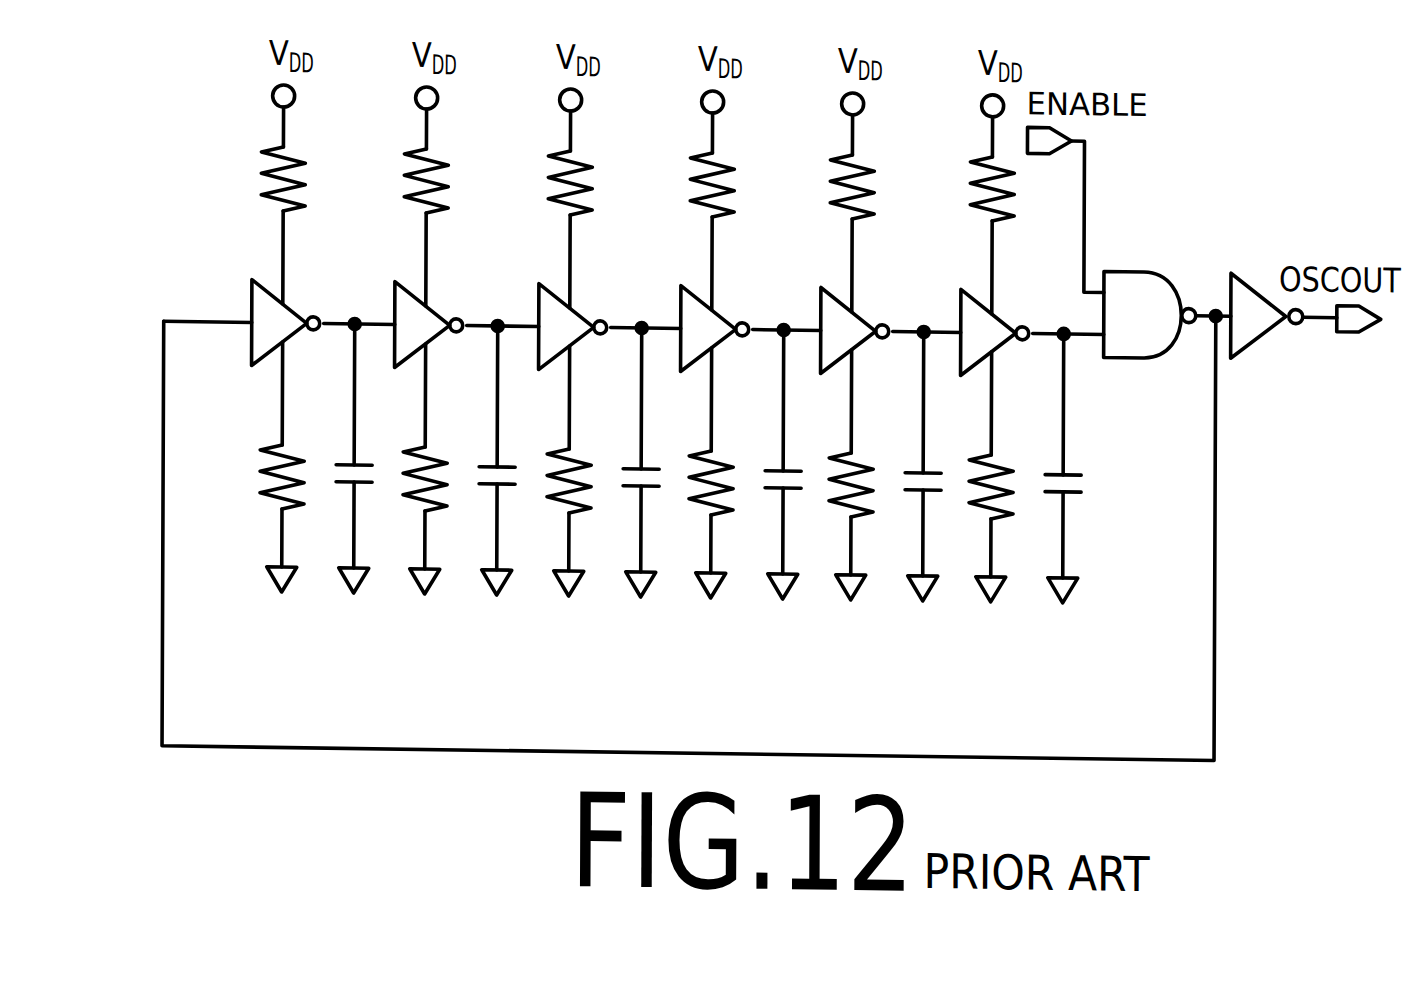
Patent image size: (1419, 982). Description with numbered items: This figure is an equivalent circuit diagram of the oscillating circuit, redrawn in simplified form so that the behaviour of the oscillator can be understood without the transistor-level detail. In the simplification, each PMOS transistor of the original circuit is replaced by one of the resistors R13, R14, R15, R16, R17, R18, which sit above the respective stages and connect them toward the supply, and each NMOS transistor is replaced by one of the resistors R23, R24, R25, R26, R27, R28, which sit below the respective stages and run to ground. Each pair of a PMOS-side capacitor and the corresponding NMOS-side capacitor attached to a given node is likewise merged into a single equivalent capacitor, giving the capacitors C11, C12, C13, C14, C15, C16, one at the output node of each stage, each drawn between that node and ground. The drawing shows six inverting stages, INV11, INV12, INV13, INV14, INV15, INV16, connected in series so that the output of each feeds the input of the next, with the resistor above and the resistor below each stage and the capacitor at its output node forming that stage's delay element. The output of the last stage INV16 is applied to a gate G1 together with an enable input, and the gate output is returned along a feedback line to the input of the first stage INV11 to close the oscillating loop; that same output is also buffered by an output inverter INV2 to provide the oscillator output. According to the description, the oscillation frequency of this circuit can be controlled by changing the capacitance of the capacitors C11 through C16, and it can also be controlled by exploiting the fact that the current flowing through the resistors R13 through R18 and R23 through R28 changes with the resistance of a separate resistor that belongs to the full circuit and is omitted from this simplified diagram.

The resistor R13 is at (258, 173).
The resistor R14 is at (401, 173).
The resistor R15 is at (545, 173).
The resistor R16 is at (687, 173).
The resistor R17 is at (827, 173).
The resistor R18 is at (967, 173).
The resistor R23 is at (295, 445).
The resistor R24 is at (438, 445).
The resistor R25 is at (582, 445).
The resistor R26 is at (724, 445).
The resistor R27 is at (864, 445).
The resistor R28 is at (1004, 445).
The capacitor C11 is at (340, 485).
The capacitor C12 is at (483, 485).
The capacitor C13 is at (627, 485).
The capacitor C14 is at (769, 485).
The capacitor C15 is at (909, 485).
The capacitor C16 is at (1049, 485).
The inverter INV11 is at (258, 293).
The inverter INV12 is at (401, 293).
The inverter INV13 is at (545, 293).
The inverter INV14 is at (687, 293).
The inverter INV15 is at (827, 293).
The inverter INV16 is at (967, 293).
The NAND gate G1 is at (1137, 256).
The output inverter INV2 is at (1256, 279).